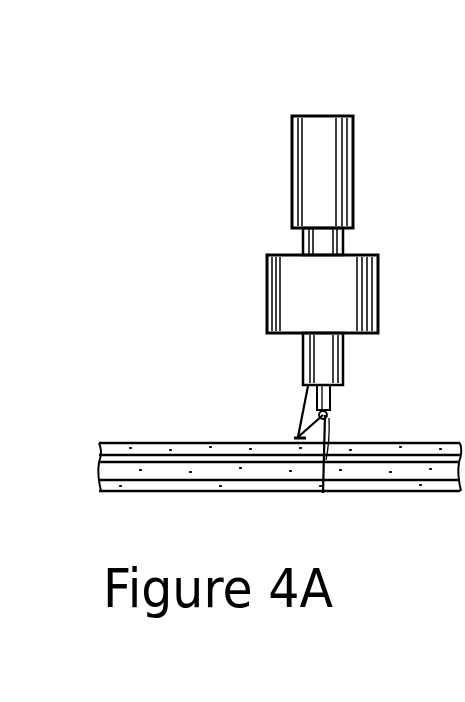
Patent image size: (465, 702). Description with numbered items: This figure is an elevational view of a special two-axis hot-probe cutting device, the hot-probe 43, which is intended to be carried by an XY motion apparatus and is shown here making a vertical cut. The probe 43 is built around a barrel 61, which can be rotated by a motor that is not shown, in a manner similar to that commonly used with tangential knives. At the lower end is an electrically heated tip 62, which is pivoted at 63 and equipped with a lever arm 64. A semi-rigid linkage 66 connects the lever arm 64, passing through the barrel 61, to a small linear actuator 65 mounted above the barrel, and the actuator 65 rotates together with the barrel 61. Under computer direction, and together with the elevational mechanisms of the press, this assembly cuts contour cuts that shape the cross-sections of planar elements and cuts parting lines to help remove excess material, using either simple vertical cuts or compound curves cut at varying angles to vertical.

The hot-probe 43 is at (381, 117).
The small linear actuator 65 is at (330, 173).
The barrel 61 is at (345, 245).
The pivot 63 is at (330, 417).
The semi-rigid linkage 66 is at (302, 408).
The electrically heated tip 62 is at (332, 437).
The lever arm 64 is at (318, 440).